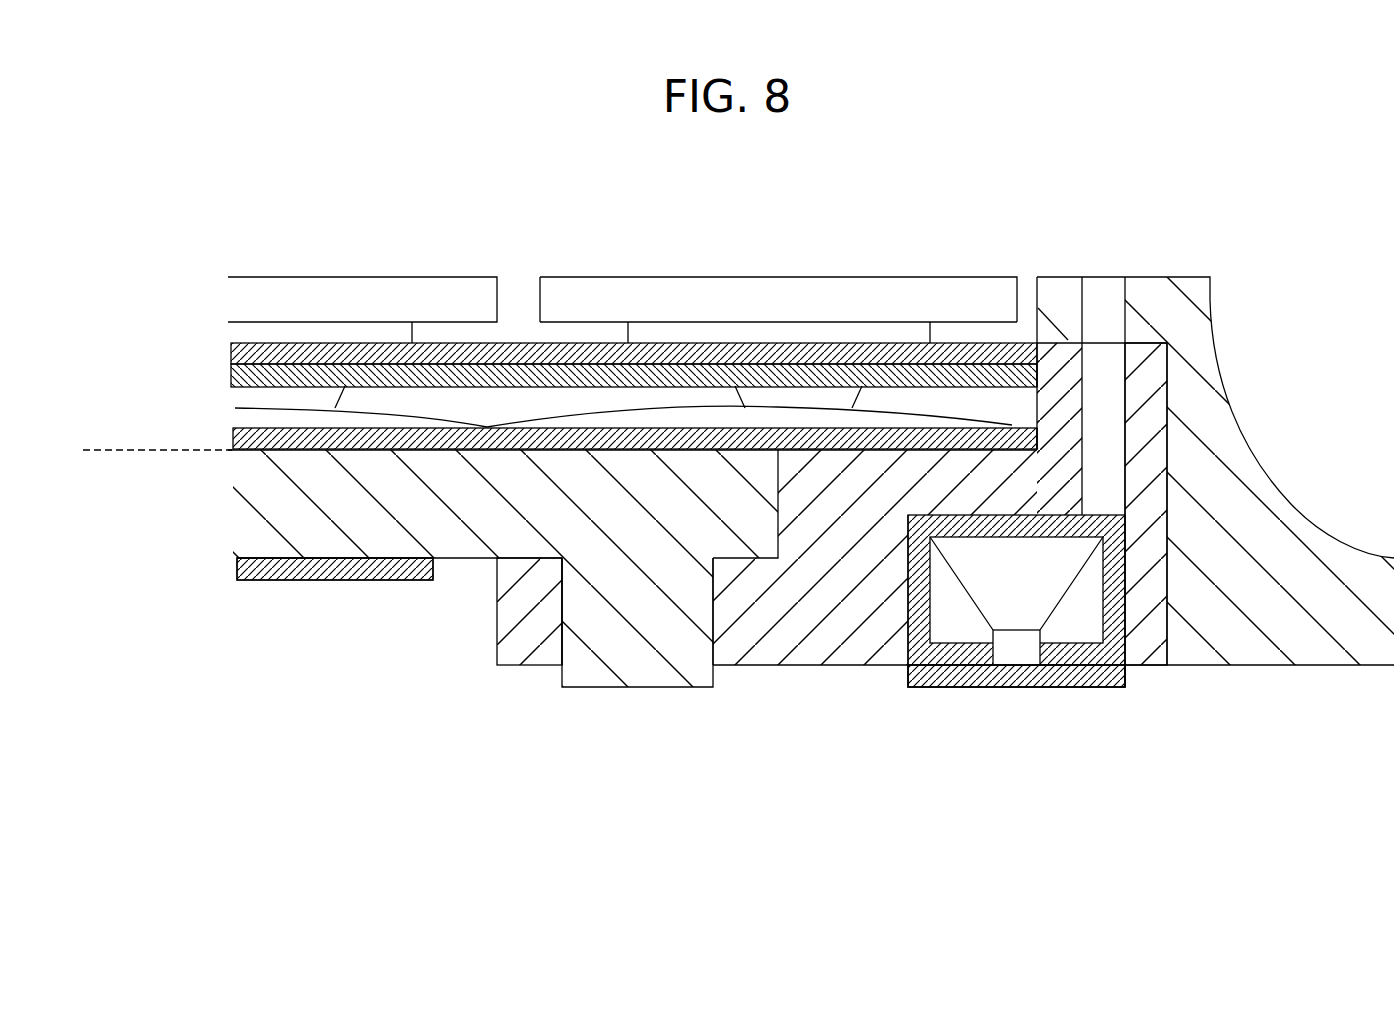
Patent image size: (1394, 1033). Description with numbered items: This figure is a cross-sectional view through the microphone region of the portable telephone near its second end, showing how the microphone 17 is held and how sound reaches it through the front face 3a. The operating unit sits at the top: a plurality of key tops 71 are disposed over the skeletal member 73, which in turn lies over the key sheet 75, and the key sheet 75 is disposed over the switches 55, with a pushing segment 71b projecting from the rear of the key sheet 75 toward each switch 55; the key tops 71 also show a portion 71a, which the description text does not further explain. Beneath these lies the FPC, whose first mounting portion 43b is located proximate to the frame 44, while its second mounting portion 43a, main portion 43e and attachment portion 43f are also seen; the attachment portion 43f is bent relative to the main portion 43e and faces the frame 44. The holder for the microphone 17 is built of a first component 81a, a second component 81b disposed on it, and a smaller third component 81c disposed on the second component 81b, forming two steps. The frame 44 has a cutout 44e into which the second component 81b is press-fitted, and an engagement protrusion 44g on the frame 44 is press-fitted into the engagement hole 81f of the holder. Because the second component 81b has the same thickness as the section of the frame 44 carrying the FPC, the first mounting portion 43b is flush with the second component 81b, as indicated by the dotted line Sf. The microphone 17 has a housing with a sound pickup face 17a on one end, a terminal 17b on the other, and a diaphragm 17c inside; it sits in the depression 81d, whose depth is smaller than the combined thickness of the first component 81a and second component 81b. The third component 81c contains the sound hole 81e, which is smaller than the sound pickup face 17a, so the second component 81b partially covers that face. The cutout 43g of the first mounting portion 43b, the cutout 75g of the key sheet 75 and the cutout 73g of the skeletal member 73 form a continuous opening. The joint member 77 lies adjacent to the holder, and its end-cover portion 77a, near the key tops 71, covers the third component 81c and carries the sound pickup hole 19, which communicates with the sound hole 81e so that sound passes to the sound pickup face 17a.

The front face 3a is at (446, 247).
The key tops 71 is at (583, 277).
The lower surface of cover panel 71a is at (656, 328).
The pushing segment 71b is at (766, 393).
The switches 55 is at (871, 405).
The skeletal member 73 is at (231, 351).
The key sheet 75 is at (231, 375).
The first mounting portion 43b is at (233, 437).
The dotted line Sf is at (143, 453).
The frame 44 is at (343, 547).
The cutout 44e is at (801, 540).
The engagement protrusion 44g is at (662, 672).
The main portion 43e is at (256, 578).
The second mounting portion 43a is at (681, 622).
The attachment portion 43f is at (935, 690).
The cutout 43g is at (1042, 446).
The cutout 73g is at (1045, 340).
The cutout 75g is at (1040, 366).
The first component 81a is at (518, 640).
The second component 81b is at (777, 505).
The third component 81c is at (1160, 375).
The depression 81d is at (895, 668).
The sound hole 81e is at (1120, 368).
The engagement hole 81f is at (563, 612).
The sound pickup hole 19 is at (1118, 283).
The joint member 77 is at (1328, 540).
The end-cover portion 77a is at (1182, 288).
The telephonic microphone 17 is at (1073, 690).
The sound pickup face 17a is at (1000, 502).
The terminal 17b is at (1017, 678).
The diaphragm 17c is at (1118, 688).